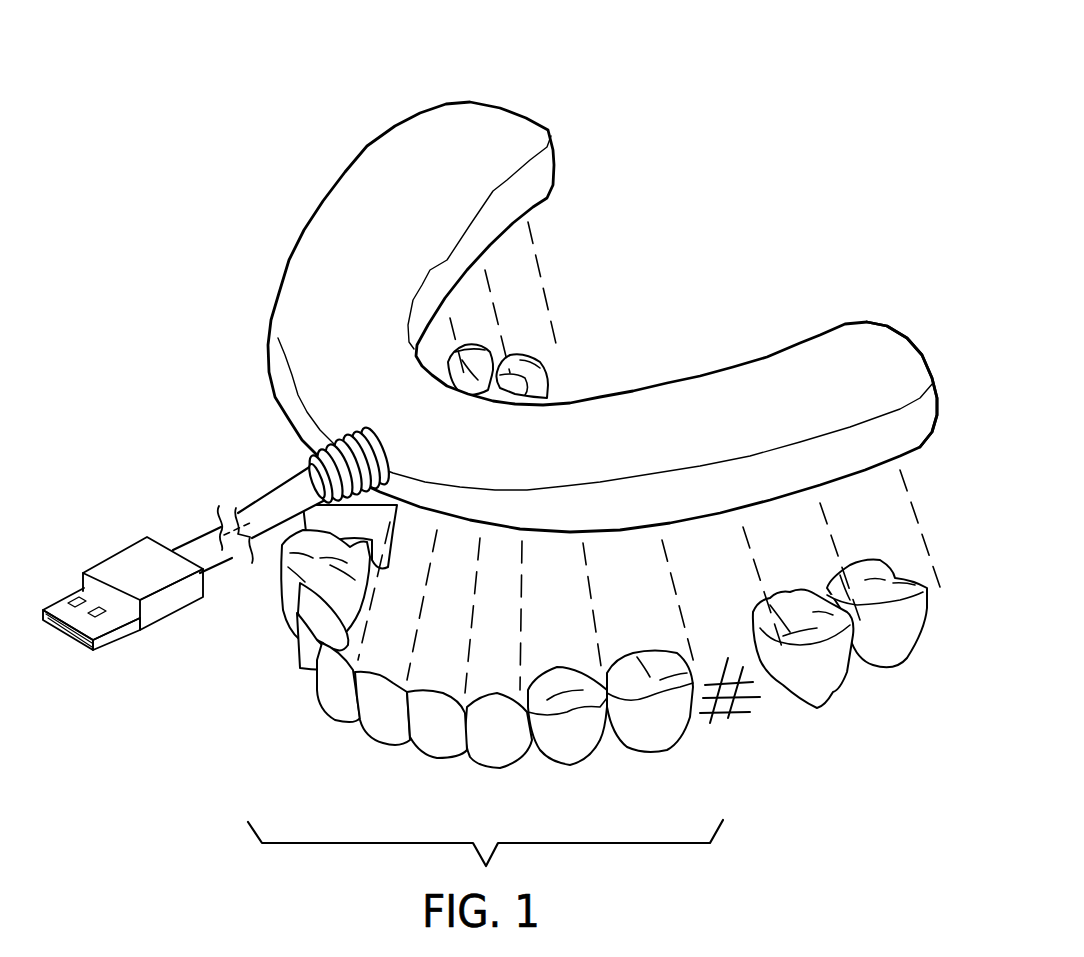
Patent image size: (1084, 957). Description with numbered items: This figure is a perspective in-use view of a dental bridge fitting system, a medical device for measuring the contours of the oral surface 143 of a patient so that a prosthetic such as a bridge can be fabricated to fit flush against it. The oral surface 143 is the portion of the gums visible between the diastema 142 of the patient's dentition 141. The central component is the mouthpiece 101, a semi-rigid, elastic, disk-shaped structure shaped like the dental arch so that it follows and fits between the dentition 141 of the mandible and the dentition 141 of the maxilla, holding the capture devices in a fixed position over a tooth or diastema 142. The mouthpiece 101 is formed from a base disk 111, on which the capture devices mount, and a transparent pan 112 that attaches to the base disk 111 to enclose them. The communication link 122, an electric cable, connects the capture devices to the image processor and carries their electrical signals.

The mouthpiece 101 is at (549, 131).
The base disk 111 is at (837, 377).
The transparent pan 112 is at (920, 448).
The communication link 122 is at (198, 548).
The dentition 141 is at (604, 576).
The diastema 142 is at (744, 648).
The oral surface 143 is at (732, 713).